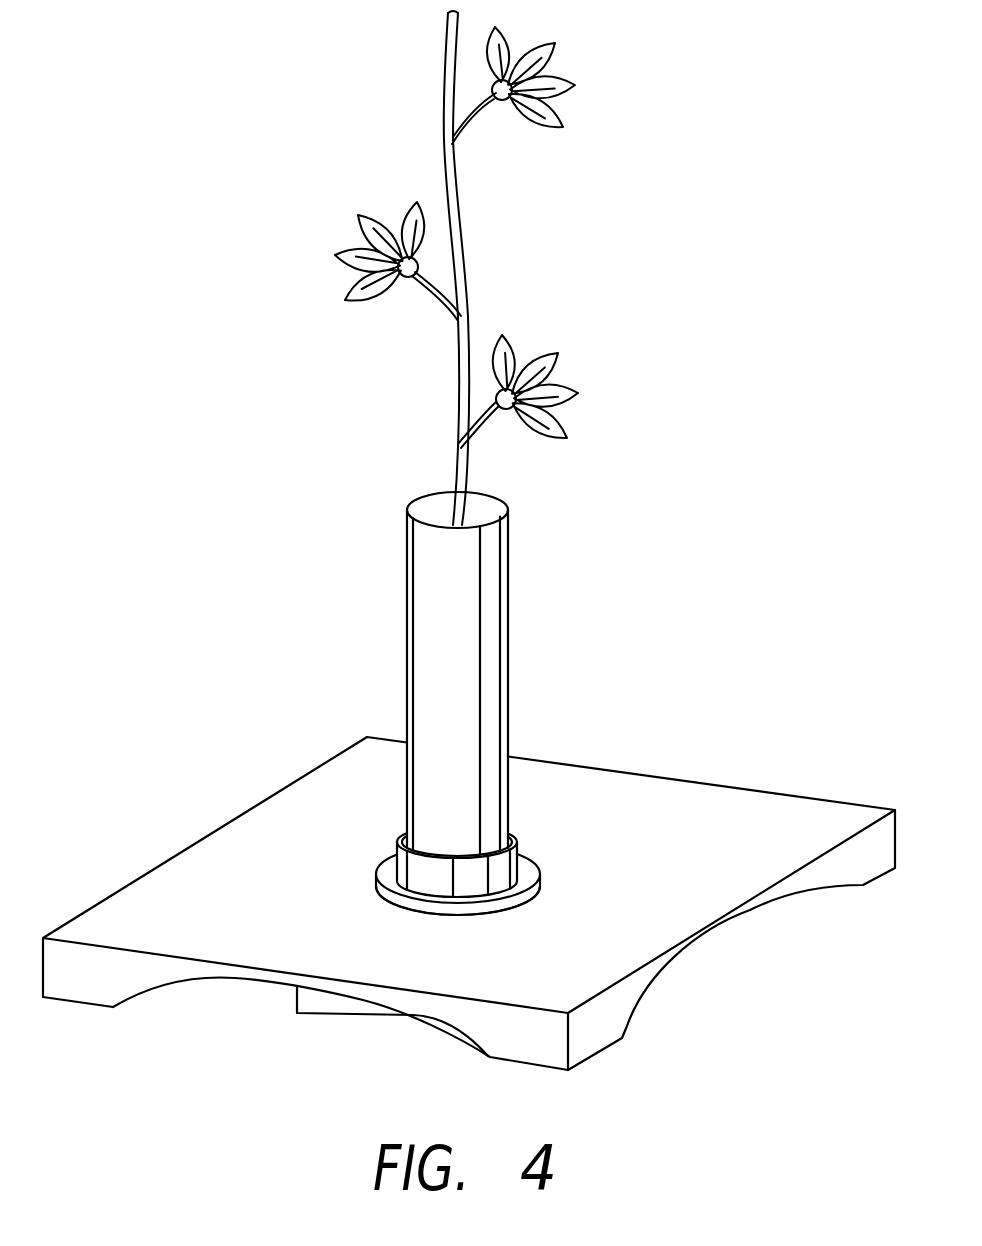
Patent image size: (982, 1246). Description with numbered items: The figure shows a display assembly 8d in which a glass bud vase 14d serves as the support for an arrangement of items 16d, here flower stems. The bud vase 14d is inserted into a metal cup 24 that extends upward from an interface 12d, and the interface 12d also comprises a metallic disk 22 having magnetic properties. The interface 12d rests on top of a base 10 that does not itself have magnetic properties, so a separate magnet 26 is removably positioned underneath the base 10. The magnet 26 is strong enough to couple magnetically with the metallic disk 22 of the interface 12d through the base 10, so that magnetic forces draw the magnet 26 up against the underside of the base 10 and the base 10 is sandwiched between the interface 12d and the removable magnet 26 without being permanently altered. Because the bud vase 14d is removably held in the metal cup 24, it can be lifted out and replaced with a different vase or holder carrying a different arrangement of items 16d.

The flower display assembly 8d is at (272, 594).
The base 10 is at (275, 792).
The interface 12d is at (508, 903).
The glass bud vase 14d is at (510, 607).
The items 16d is at (465, 237).
The metallic disk 22 is at (380, 885).
The metal cup 24 is at (517, 850).
The magnet 26 is at (297, 1013).